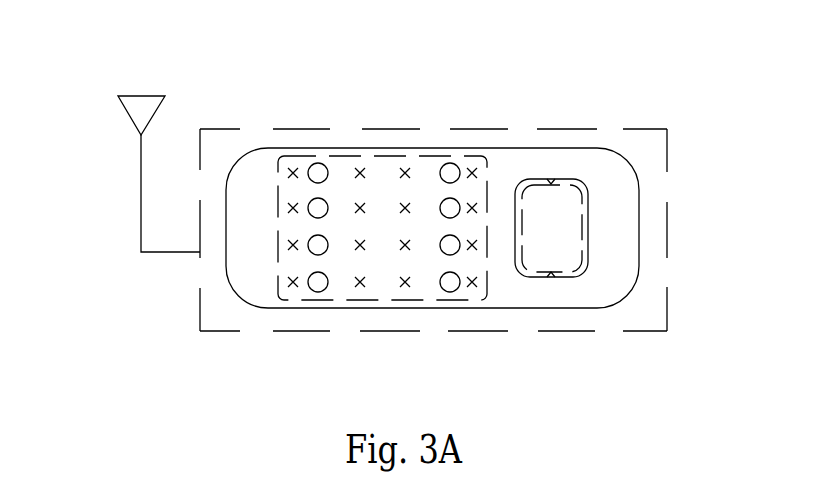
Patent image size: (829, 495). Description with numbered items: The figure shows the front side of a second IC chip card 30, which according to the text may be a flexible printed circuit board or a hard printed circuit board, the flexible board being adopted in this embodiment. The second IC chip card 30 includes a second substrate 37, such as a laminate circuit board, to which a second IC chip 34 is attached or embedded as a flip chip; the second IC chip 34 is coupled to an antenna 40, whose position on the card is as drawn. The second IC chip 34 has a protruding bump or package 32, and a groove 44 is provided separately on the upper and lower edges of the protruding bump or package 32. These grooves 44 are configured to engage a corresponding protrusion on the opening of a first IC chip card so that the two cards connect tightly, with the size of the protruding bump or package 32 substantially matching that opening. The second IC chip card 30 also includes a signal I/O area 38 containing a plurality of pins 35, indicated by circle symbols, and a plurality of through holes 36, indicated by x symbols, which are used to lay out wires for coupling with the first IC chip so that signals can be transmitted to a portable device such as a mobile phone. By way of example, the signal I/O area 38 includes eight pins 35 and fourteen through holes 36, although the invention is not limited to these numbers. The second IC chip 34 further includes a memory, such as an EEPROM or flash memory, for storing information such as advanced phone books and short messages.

The second IC chip card 30 is at (470, 248).
The protruding bump or package 32 is at (627, 281).
The second IC chip 34 is at (580, 262).
The pins 35 is at (316, 177).
The through holes 36 is at (363, 172).
The second substrate 37 is at (308, 308).
The signal I/O area 38 is at (305, 183).
The antenna 40 is at (125, 122).
The groove 44 is at (552, 275).